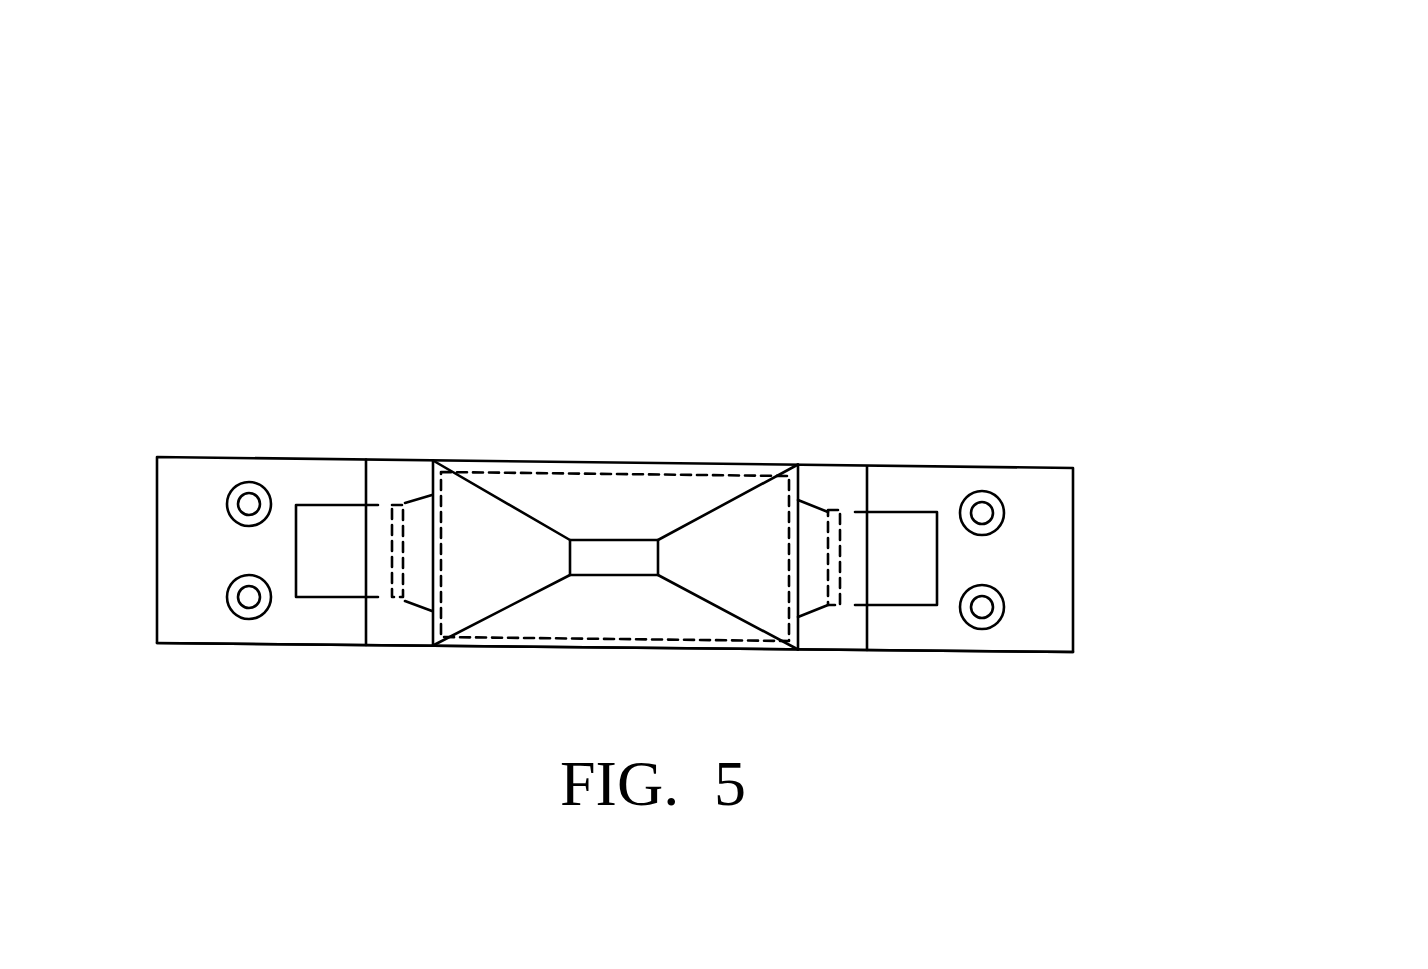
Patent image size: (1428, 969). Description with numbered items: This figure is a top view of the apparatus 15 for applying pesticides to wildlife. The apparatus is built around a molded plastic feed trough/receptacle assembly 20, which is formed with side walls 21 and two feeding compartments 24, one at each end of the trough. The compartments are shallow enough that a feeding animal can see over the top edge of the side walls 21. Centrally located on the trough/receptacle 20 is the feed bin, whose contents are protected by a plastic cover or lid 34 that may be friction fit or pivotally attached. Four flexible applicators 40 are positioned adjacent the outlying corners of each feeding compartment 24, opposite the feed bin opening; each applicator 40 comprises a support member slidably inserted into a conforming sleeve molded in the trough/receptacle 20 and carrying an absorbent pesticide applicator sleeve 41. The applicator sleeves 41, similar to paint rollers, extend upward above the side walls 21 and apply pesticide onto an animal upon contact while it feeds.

The apparatus 15 is at (948, 232).
The feed trough/receptacle assembly 20 is at (1058, 512).
The side walls 21 is at (973, 653).
The feeding compartments 24 is at (330, 573).
The cover or lid 34 is at (612, 515).
The flexible applicator 40 is at (249, 597).
The absorbent applicator sleeve 41 is at (249, 597).